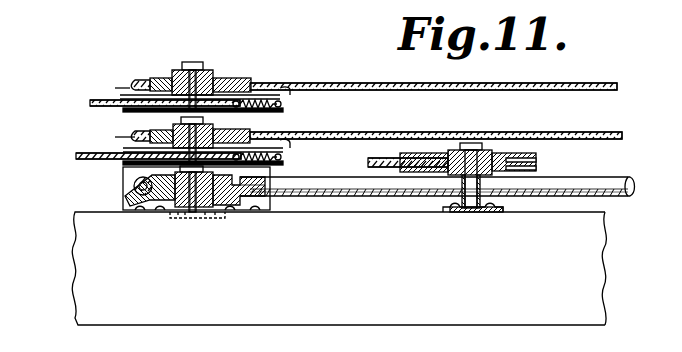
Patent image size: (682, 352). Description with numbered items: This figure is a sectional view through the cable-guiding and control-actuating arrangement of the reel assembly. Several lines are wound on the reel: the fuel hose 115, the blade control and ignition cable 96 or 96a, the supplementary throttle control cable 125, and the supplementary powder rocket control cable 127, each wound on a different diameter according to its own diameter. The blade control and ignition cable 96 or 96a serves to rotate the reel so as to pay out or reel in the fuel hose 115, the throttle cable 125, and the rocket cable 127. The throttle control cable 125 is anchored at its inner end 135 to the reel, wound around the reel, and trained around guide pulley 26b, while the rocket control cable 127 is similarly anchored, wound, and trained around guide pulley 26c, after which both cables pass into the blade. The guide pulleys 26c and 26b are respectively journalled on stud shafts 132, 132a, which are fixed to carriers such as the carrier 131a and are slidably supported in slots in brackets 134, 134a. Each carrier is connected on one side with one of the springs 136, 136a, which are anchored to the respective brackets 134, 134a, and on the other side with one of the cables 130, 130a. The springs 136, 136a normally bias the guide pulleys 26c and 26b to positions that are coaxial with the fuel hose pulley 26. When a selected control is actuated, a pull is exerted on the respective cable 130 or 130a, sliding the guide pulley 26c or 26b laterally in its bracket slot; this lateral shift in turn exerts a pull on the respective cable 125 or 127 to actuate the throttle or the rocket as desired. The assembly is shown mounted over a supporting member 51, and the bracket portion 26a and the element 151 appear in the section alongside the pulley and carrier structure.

The base plate 51 is at (252, 295).
The blade control and ignition cable 96 is at (387, 165).
The blade control and ignition cable 96a is at (439, 206).
The fuel hose pulley 26 is at (150, 210).
The bracket 26a is at (525, 170).
The guide pulley 26b is at (132, 140).
The guide pulley 26c is at (135, 92).
The fuel hose 115 is at (128, 180).
The supplementary throttle control cable 125 is at (354, 138).
The supplementary powder rocket control cable 127 is at (492, 86).
The cable 130 is at (95, 105).
The cable 130a is at (90, 158).
The carrier 131a is at (222, 88).
The stud shaft 132 is at (200, 70).
The stud shaft 132a is at (180, 128).
The bracket 134 is at (283, 96).
The bracket 134a is at (283, 160).
The inner end 135 is at (138, 80).
The spring 136 is at (256, 95).
The spring 136a is at (265, 140).
The collar 151 is at (170, 80).